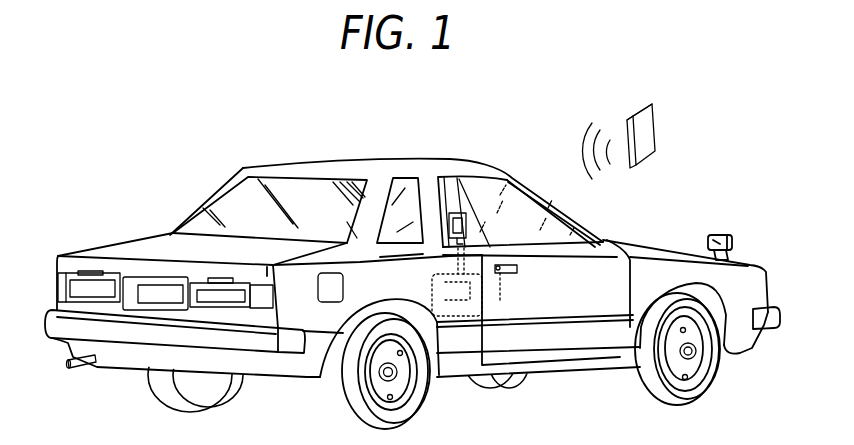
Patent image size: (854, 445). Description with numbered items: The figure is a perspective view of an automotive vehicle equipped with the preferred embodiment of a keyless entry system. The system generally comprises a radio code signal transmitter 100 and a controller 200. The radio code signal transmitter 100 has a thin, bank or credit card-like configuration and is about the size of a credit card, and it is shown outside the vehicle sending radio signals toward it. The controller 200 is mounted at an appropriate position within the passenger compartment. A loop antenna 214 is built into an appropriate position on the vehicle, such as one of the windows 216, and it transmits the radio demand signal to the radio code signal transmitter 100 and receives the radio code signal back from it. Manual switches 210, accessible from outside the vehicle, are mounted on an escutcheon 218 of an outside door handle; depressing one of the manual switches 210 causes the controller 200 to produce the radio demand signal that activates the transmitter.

The radio code signal transmitter 100 is at (655, 133).
The controller 200 is at (435, 283).
The manual switches 210 is at (497, 265).
The loop antenna 214 is at (462, 215).
The windows 216 is at (450, 182).
The escutcheon 218 is at (513, 273).